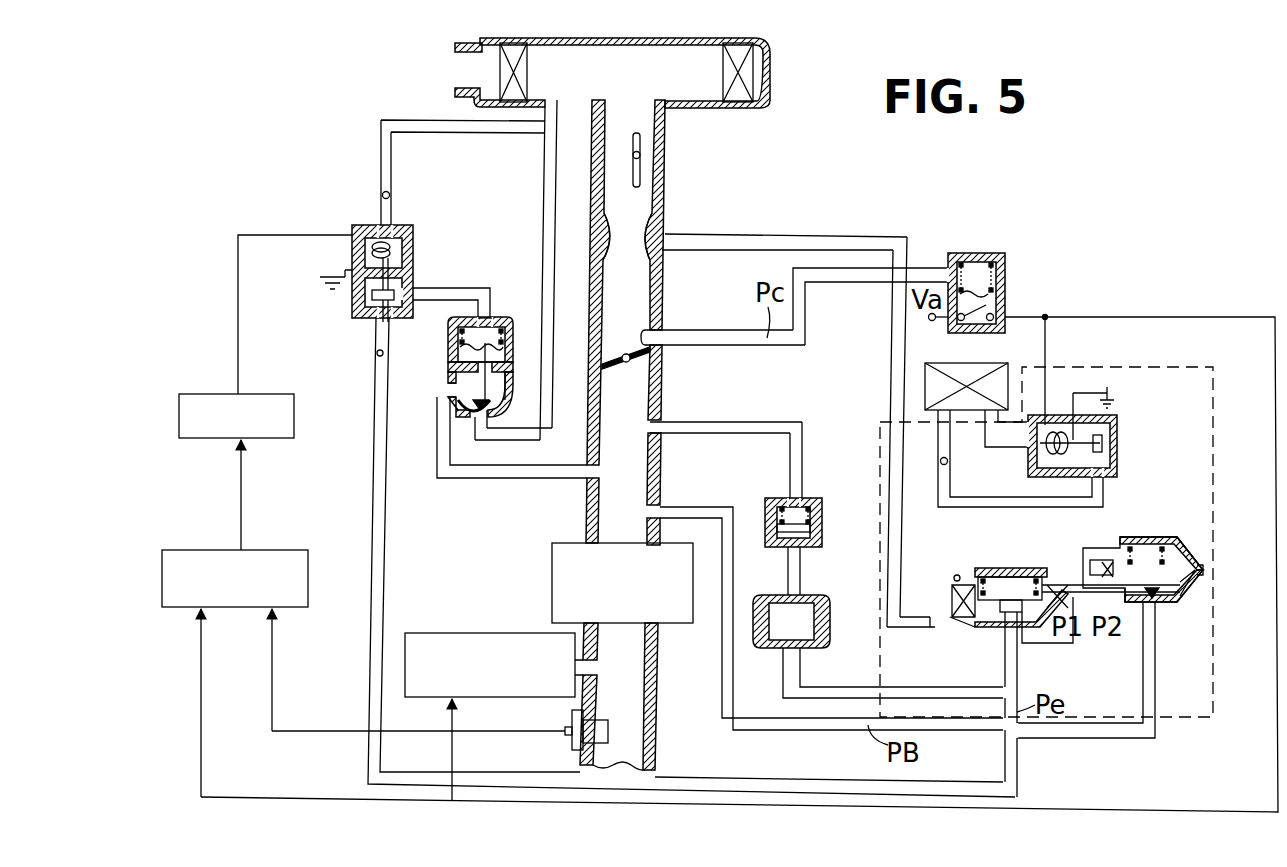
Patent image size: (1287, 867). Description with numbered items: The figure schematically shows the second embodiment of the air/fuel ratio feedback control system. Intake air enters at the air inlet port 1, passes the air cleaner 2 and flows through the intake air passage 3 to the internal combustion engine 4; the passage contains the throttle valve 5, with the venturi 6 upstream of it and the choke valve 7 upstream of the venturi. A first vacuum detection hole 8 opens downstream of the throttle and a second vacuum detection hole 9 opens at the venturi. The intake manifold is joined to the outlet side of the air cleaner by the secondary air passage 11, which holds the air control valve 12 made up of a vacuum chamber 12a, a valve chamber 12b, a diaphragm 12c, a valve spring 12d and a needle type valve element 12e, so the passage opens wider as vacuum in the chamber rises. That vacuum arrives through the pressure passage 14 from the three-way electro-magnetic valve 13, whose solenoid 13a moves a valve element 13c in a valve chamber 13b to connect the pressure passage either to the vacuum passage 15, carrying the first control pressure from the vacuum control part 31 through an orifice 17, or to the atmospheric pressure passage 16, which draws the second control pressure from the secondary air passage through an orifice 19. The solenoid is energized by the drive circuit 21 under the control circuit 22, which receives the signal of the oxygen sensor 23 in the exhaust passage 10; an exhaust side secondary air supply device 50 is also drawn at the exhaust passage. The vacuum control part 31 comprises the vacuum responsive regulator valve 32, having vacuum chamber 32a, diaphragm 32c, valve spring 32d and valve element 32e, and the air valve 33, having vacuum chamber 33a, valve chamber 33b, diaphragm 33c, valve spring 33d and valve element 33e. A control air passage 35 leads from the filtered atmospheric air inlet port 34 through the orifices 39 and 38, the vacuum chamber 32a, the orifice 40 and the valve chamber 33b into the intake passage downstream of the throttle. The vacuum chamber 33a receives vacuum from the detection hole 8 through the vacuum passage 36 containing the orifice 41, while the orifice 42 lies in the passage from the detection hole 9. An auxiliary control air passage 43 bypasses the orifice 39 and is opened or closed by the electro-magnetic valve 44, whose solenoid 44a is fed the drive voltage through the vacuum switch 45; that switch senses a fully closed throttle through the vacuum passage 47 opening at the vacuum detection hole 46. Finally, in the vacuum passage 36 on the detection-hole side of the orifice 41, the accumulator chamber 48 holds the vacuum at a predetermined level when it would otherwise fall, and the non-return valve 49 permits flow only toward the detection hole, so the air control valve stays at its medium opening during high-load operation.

The air inlet port 1 is at (470, 80).
The air cleaner 2 is at (503, 63).
The intake air passage 3 is at (633, 412).
The internal combustion engine 4 is at (552, 588).
The throttle valve 5 is at (627, 356).
The venturi 6 is at (607, 252).
The choke valve 7 is at (641, 172).
The first vacuum detection hole 8 is at (652, 428).
The second vacuum detection hole 9 is at (643, 240).
The exhaust passage 10 is at (630, 716).
The air intake side secondary air passage 11 is at (543, 224).
The air control valve 12 is at (444, 352).
The vacuum chamber 12a is at (485, 333).
The valve chamber 12b is at (455, 390).
The diaphragm 12c is at (458, 362).
The valve spring 12d is at (513, 335).
The needle type valve element 12e is at (472, 402).
The three-way electro-magnetic valve 13 is at (417, 281).
The solenoid 13a is at (393, 249).
The valve chamber 13b is at (356, 298).
The valve element 13c is at (347, 318).
The pressure passage 14 is at (460, 292).
The vacuum passage 15 is at (383, 512).
The atmospheric pressure passage 16 is at (488, 135).
The orifice 17 is at (375, 355).
The orifice 19 is at (380, 186).
The drive circuit 21 is at (300, 428).
The control circuit 22 is at (308, 590).
The oxygen sensor 23 is at (570, 720).
The vacuum control part 31 is at (1213, 680).
The vacuum responsive regulator valve 32 is at (1018, 566).
The vacuum chamber 32a is at (952, 600).
The diaphragm 32c is at (985, 629).
The valve spring 32d is at (1000, 566).
The valve element 32e is at (1017, 630).
The air valve 33 is at (1192, 593).
The vacuum chamber 33a is at (1200, 560).
The valve chamber 33b is at (1203, 572).
The diaphragm 33c is at (1145, 605).
The valve spring 33d is at (1140, 537).
The valve element 33e is at (1158, 603).
The atmospheric air inlet port 34 is at (1010, 393).
The control air passage 35 is at (932, 500).
The vacuum passage 36 is at (735, 440).
The orifice 38 is at (958, 575).
The orifice 39 is at (947, 463).
The orifice 40 is at (1085, 566).
The orifice 41 is at (970, 700).
The orifice 42 is at (933, 628).
The auxiliary control air passage 43 is at (1007, 447).
The electro-magnetic valve 44 is at (1120, 455).
The solenoid 44a is at (1057, 430).
The vacuum switch 45 is at (1005, 260).
The vacuum detection hole 46 is at (660, 331).
The vacuum passage 47 is at (805, 337).
The accumulator chamber 48 is at (778, 636).
The non-return valve 49 is at (770, 548).
The exhaust side secondary air supply device 50 is at (465, 633).